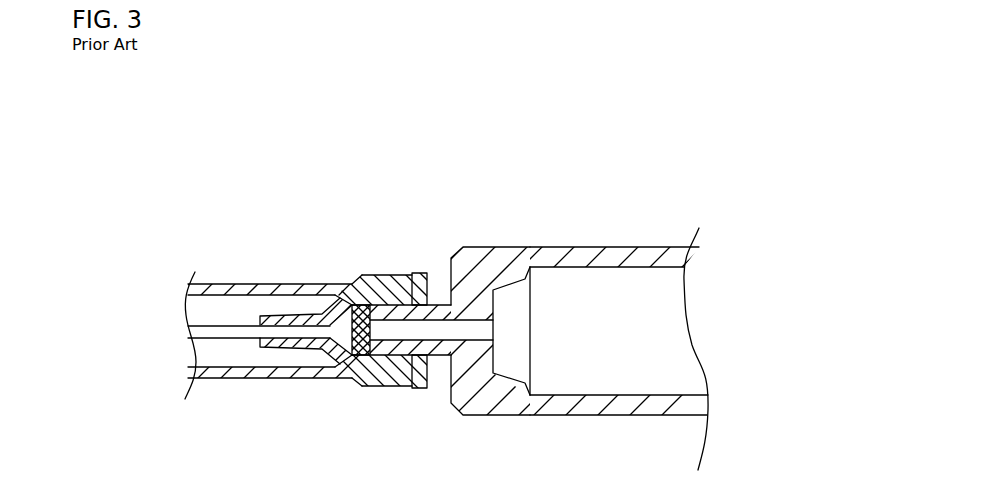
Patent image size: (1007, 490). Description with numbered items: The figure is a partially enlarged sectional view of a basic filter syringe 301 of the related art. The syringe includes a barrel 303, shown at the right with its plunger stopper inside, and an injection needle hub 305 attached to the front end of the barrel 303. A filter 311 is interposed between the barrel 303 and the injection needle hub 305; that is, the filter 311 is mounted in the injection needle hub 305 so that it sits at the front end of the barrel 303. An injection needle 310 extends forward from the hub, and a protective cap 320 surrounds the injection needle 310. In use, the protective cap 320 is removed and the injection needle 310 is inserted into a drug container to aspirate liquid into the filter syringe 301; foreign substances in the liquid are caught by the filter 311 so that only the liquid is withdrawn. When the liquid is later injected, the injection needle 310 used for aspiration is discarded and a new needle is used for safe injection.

The filter syringe 301 is at (669, 150).
The barrel 303 is at (412, 352).
The injection needle hub 305 is at (315, 366).
The injection needle 310 is at (210, 338).
The filter 311 is at (367, 303).
The protective cap 320 is at (252, 284).